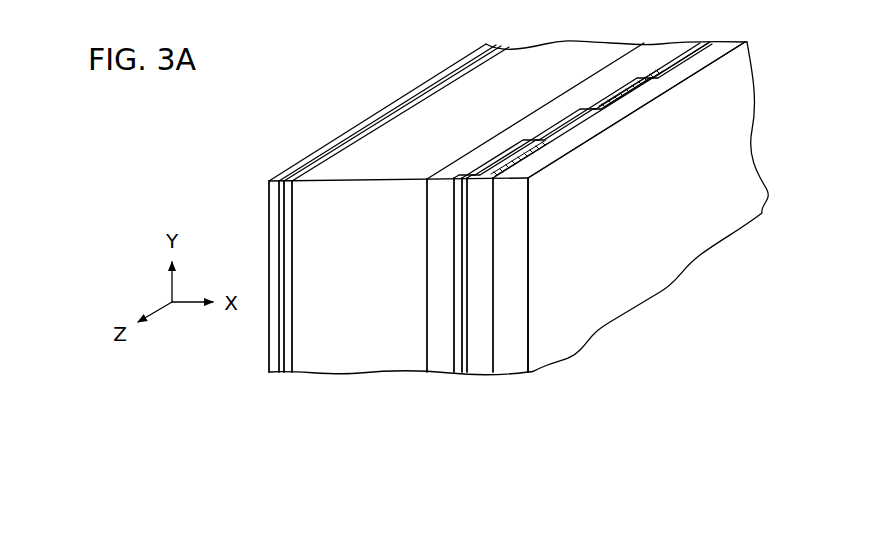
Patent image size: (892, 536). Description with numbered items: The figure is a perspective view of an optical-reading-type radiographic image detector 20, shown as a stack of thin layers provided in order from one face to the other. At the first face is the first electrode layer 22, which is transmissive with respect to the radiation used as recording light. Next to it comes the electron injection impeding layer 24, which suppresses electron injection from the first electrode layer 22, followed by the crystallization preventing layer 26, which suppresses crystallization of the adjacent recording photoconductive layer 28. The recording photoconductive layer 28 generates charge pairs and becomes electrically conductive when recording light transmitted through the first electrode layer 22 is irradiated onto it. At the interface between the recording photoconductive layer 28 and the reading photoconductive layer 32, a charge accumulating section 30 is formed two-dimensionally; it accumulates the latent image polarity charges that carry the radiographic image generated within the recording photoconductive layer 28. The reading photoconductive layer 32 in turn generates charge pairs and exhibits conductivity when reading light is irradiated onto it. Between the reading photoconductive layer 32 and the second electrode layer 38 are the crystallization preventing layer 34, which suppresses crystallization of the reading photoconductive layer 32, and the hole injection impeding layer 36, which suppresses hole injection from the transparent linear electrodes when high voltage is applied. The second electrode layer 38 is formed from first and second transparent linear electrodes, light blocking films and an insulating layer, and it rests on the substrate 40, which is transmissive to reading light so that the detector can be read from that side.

The radiographic image detector 20 is at (318, 93).
The first electrode layer 22 is at (273, 372).
The electron injection impeding layer 24 is at (283, 372).
The crystallization preventing layer 26 is at (290, 372).
The recording photoconductive layer 28 is at (340, 360).
The charge accumulating section 30 is at (423, 338).
The reading photoconductive layer 32 is at (442, 363).
The crystallization preventing layer 34 is at (457, 372).
The hole injection impeding layer 36 is at (463, 368).
The second electrode layer 38 is at (480, 363).
The substrate 40 is at (513, 363).